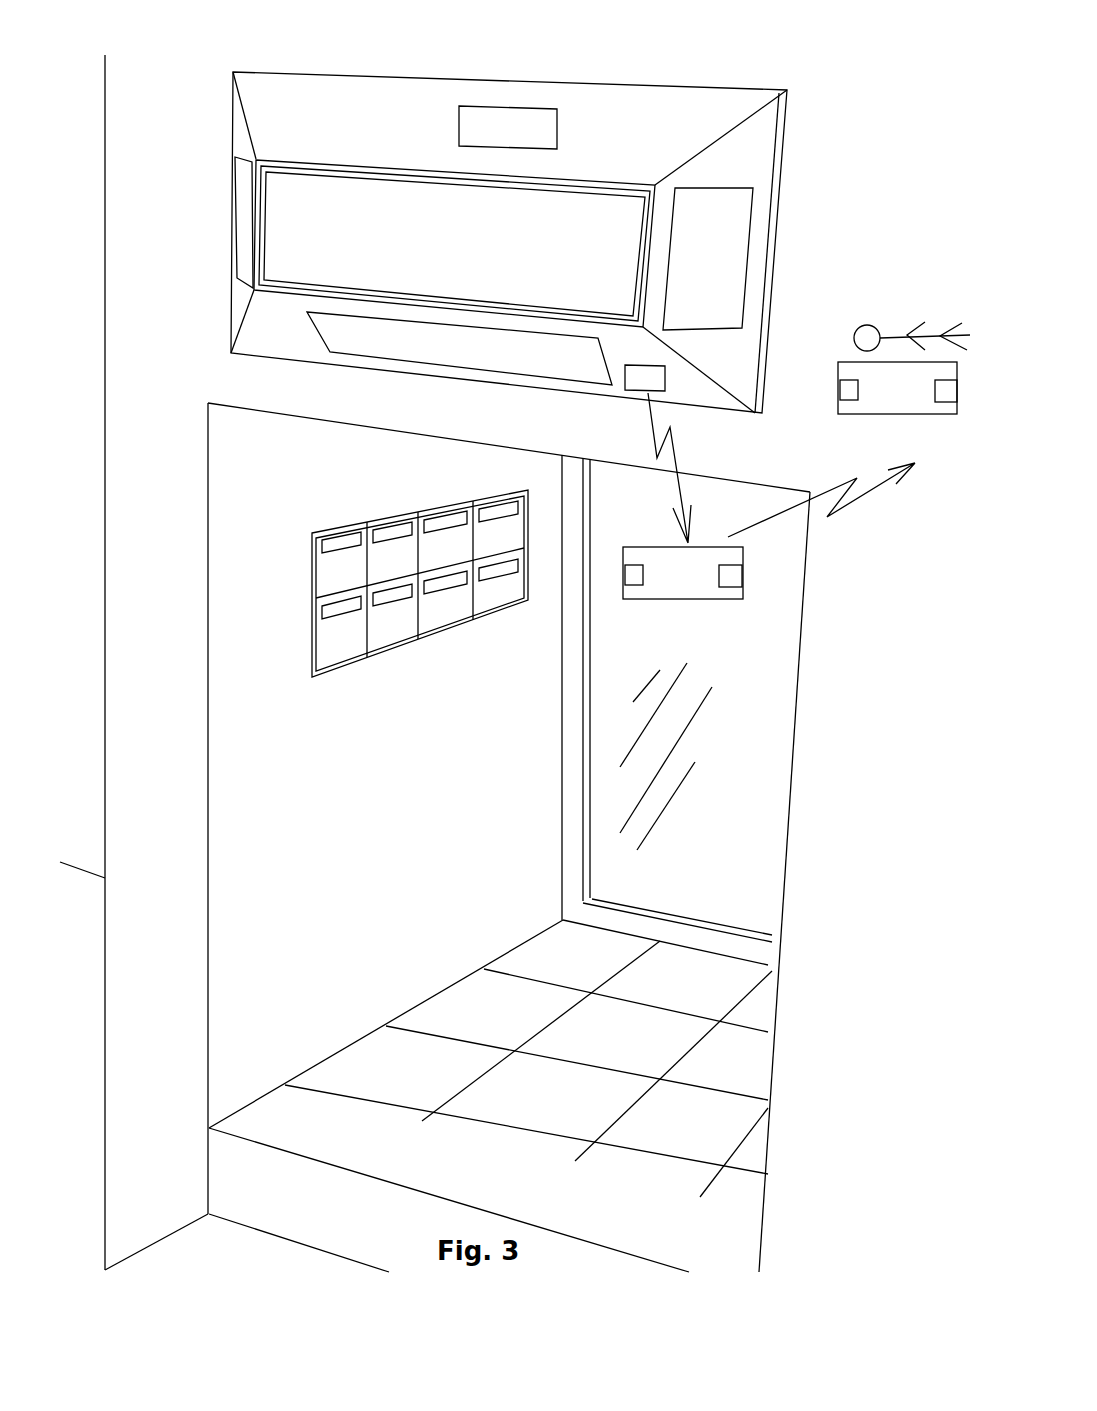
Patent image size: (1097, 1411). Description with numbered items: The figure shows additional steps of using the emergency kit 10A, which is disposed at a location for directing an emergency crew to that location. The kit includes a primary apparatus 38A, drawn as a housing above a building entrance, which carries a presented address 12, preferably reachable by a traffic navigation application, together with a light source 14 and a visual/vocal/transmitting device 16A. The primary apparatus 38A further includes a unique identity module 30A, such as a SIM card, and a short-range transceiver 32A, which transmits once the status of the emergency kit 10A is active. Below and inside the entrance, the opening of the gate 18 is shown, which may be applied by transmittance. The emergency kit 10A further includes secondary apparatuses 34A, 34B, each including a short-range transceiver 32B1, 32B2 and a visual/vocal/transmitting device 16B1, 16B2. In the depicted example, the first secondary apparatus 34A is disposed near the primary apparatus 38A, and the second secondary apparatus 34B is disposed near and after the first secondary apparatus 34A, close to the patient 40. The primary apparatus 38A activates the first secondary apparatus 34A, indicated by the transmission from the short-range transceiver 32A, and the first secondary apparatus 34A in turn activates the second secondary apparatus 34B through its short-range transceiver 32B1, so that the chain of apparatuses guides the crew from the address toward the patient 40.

The emergency kit 10A is at (283, 394).
The presented address 12 is at (352, 188).
The light source 14 is at (430, 353).
The visual/vocal/transmitting device 16A is at (243, 226).
The visual/vocal/transmitting device 16B1 is at (627, 578).
The visual/vocal/transmitting device 16B2 is at (843, 390).
The opening of the gate 18 is at (388, 741).
The unique identity module 30A is at (501, 118).
The short-range transceiver 32A is at (647, 378).
The short-range transceiver 32B1 is at (728, 575).
The short-range transceiver 32B2 is at (957, 392).
The secondary apparatus 34A is at (695, 578).
The secondary apparatus 34B is at (910, 393).
The primary apparatus 38A is at (623, 125).
The patient 40 is at (938, 330).